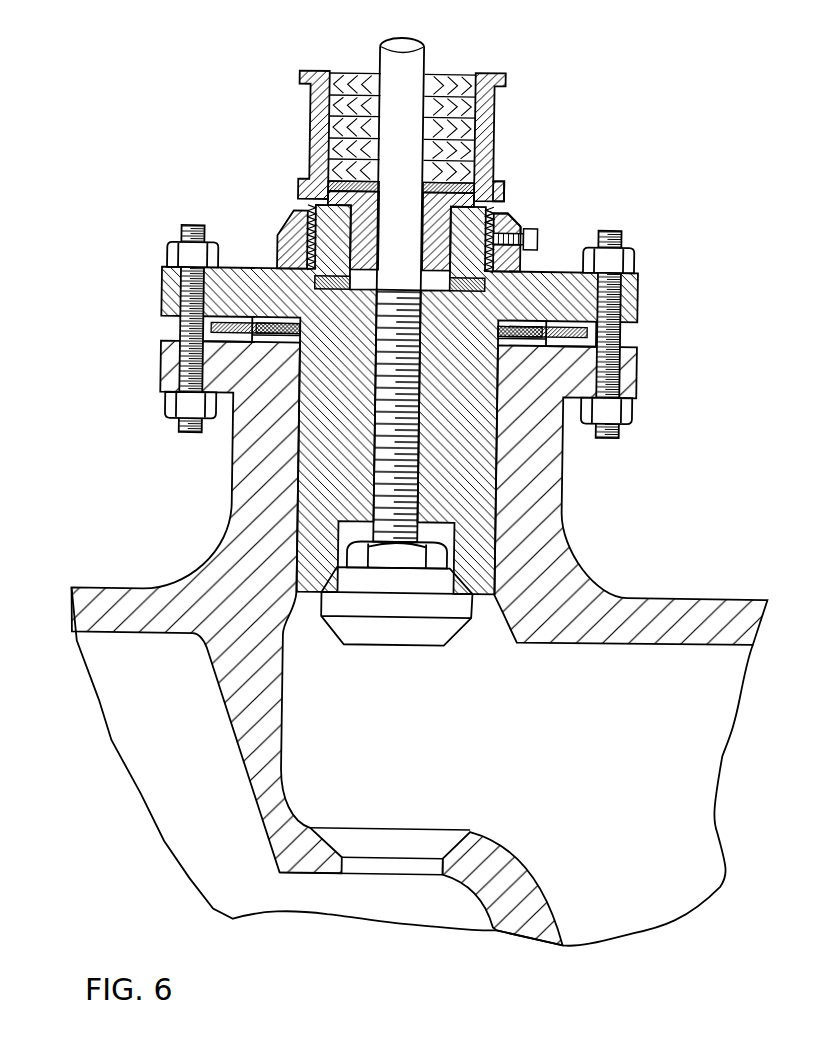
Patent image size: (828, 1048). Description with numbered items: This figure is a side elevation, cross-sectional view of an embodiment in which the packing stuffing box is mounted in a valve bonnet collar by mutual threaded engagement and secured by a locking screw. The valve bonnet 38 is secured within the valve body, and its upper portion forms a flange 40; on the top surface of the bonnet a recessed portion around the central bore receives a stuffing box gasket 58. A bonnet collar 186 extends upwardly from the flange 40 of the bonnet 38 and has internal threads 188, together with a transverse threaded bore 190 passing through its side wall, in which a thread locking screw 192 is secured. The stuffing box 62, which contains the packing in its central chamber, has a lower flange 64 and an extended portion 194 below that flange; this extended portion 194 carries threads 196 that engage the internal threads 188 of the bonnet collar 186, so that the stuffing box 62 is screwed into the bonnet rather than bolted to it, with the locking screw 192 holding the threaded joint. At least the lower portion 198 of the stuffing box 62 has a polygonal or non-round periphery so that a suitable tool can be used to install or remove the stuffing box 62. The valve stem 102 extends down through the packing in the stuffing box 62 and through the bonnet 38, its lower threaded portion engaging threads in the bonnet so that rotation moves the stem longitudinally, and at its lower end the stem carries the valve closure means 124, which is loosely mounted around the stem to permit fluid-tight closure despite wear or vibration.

The valve bonnet 38 is at (492, 481).
The flange 40 is at (162, 292).
The stuffing box gasket 58 is at (277, 265).
The stuffing box 62 is at (307, 116).
The lower flange 64 is at (298, 191).
The valve stem 102 is at (422, 52).
The valve closure means 124 is at (325, 585).
The bonnet collar 186 is at (516, 224).
The internal threads 188 is at (510, 222).
The transverse threaded bore 190 is at (521, 226).
The thread locking screw 192 is at (538, 238).
The extended portion 194 is at (520, 250).
The threads 196 is at (548, 284).
The lower portion 198 is at (496, 158).